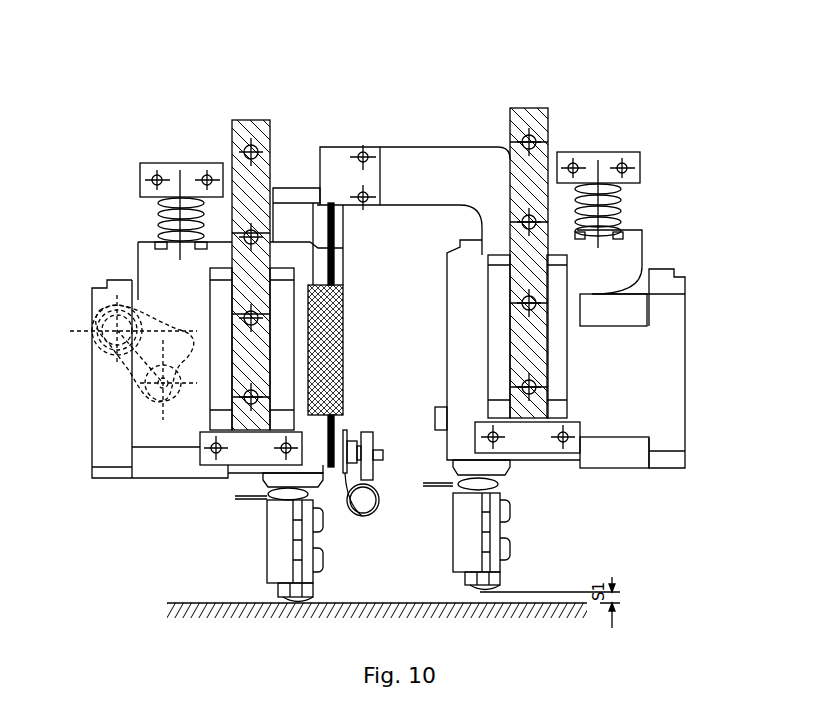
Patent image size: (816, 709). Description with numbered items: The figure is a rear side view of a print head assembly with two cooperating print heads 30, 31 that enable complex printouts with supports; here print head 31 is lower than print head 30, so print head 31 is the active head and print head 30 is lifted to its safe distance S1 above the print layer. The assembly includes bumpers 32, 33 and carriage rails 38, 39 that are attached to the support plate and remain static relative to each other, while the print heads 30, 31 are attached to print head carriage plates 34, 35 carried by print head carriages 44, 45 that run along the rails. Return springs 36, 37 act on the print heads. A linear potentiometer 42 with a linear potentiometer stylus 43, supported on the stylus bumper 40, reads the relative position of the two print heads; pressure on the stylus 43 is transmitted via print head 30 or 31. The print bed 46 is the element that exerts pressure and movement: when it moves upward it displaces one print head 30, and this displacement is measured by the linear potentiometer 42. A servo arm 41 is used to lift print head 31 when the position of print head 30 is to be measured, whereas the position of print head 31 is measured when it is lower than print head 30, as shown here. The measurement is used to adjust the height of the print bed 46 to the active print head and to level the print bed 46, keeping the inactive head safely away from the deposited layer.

The print head 30 is at (512, 535).
The print head 31 is at (264, 545).
The bumper 32 is at (583, 456).
The bumper 33 is at (198, 458).
The print head carriage plate 34 is at (649, 243).
The print head carriage plate 35 is at (137, 256).
The return spring 36 is at (613, 214).
The return spring 37 is at (162, 235).
The carriage rail 38 is at (537, 107).
The carriage rail 39 is at (230, 125).
The stylus bumper 40 is at (348, 145).
The servo arm 41 is at (114, 365).
The linear potentiometer 42 is at (343, 298).
The linear potentiometer stylus 43 is at (330, 202).
The print head carriage 44 is at (578, 296).
The print head carriage 45 is at (208, 301).
The print bed 46 is at (192, 602).